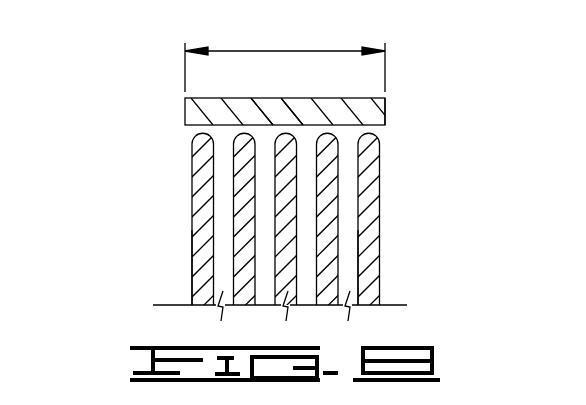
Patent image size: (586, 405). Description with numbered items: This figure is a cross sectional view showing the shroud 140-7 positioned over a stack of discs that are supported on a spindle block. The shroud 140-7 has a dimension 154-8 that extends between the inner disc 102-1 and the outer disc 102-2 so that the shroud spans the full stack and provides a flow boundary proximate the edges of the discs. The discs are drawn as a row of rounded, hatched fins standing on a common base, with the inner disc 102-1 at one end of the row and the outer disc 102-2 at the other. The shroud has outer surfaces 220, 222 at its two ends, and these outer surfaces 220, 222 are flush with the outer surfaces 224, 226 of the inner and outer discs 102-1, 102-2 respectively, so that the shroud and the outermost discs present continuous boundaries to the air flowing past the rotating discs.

The dimension 154-8 is at (242, 50).
The shroud 140-7 is at (255, 113).
The outer surface of shroud 220 is at (185, 116).
The outer surface of shroud 222 is at (385, 109).
The inner disc 102-1 is at (182, 171).
The outer disc 102-2 is at (386, 166).
The outer surface of inner disc 224 is at (192, 265).
The outer surface of outer disc 226 is at (358, 300).